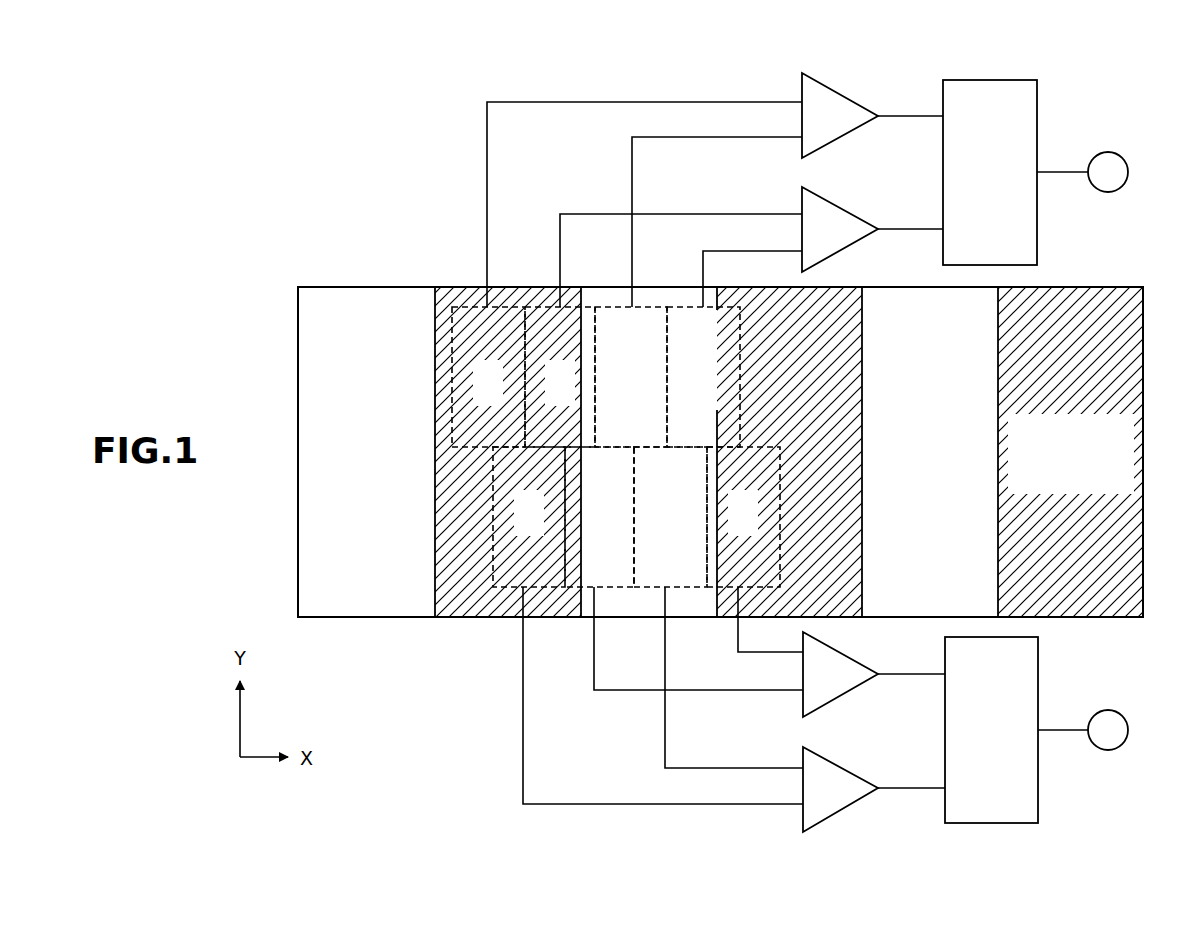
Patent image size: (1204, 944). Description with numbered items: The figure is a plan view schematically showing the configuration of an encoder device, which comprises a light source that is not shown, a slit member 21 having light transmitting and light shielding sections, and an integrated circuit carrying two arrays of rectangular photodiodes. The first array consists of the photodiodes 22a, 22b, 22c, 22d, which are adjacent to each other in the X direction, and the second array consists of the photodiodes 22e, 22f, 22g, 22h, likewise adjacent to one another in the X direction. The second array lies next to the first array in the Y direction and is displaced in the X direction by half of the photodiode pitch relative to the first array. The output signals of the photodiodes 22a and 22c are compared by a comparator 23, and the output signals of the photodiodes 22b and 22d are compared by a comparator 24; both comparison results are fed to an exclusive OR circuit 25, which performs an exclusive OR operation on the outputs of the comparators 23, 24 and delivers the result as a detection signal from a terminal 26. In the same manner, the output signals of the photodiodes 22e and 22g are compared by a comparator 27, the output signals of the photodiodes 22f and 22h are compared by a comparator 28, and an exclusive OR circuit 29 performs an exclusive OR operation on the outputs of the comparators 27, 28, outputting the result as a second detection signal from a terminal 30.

The slit member 21 is at (1143, 338).
The photodiode 22a is at (463, 300).
The photodiode 22b is at (533, 300).
The photodiode 22c is at (605, 300).
The photodiode 22d is at (677, 300).
The photodiode 22e is at (500, 598).
The photodiode 22f is at (573, 598).
The photodiode 22g is at (644, 598).
The photodiode 22h is at (716, 598).
The comparator 23 is at (802, 88).
The comparator 24 is at (802, 201).
The exclusive OR circuit 25 is at (990, 80).
The terminal 26 is at (1108, 152).
The comparator 27 is at (803, 826).
The comparator 28 is at (803, 710).
The exclusive OR circuit 29 is at (988, 823).
The terminal 30 is at (1108, 750).